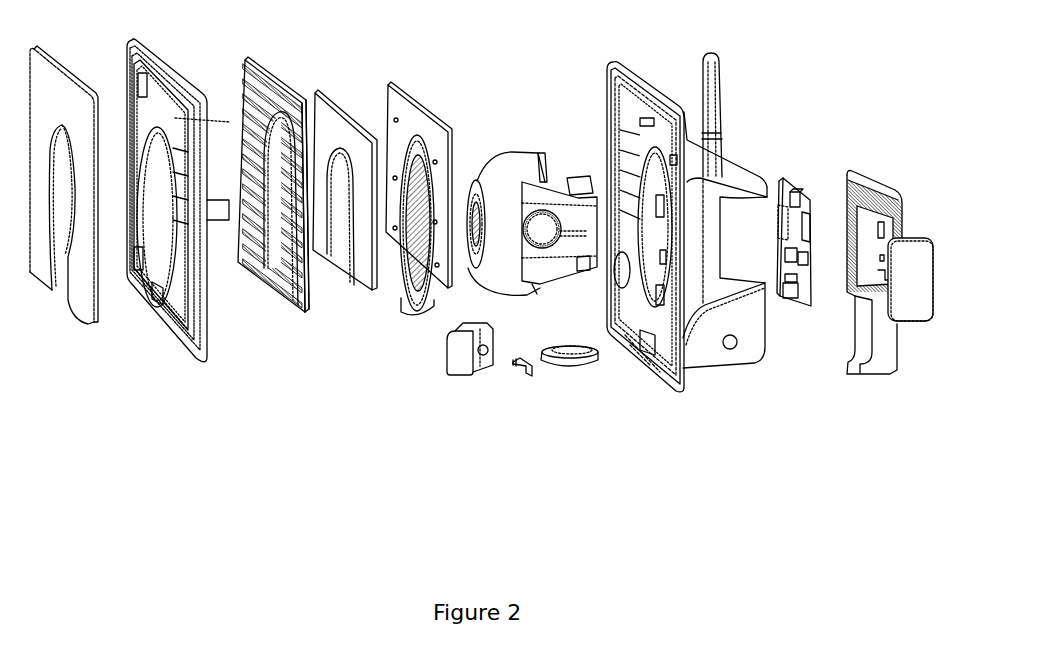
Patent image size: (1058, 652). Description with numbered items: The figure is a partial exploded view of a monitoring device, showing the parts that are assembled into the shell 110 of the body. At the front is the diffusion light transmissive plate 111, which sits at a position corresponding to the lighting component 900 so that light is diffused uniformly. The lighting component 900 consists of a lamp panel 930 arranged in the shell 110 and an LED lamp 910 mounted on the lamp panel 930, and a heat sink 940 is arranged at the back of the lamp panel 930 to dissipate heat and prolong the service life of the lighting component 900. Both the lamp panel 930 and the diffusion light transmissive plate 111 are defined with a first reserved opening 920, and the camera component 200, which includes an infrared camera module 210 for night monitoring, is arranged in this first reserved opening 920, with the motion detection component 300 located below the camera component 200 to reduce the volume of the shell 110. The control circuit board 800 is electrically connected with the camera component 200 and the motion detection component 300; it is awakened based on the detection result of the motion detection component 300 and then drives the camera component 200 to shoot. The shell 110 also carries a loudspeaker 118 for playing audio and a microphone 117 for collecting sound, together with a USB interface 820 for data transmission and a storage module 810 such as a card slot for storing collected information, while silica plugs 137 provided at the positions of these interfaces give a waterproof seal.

The shell 110 is at (705, 350).
The diffusion light transmissive plate 111 is at (83, 306).
The microphone 117 is at (522, 377).
The loudspeaker 118 is at (583, 368).
The silica plugs 137 is at (920, 300).
The camera component 200 is at (500, 164).
The infrared camera module 210 is at (433, 285).
The motion detection component 300 is at (452, 374).
The control circuit board 800 is at (813, 250).
The storage module 810 is at (805, 196).
The USB interface 820 is at (792, 281).
The lighting component 900 is at (278, 203).
The LED lamp 910 is at (291, 305).
The first reserved opening 920 is at (280, 108).
The lamp panel 930 is at (303, 313).
The heat sink 940 is at (365, 268).